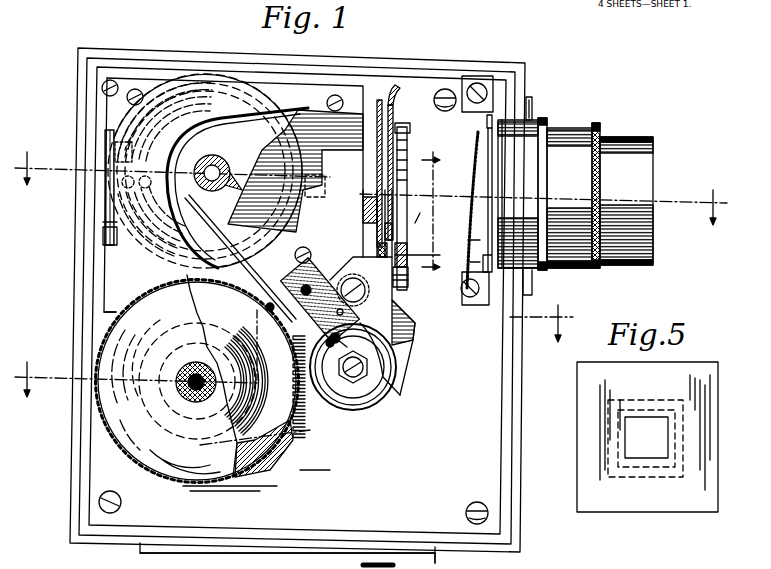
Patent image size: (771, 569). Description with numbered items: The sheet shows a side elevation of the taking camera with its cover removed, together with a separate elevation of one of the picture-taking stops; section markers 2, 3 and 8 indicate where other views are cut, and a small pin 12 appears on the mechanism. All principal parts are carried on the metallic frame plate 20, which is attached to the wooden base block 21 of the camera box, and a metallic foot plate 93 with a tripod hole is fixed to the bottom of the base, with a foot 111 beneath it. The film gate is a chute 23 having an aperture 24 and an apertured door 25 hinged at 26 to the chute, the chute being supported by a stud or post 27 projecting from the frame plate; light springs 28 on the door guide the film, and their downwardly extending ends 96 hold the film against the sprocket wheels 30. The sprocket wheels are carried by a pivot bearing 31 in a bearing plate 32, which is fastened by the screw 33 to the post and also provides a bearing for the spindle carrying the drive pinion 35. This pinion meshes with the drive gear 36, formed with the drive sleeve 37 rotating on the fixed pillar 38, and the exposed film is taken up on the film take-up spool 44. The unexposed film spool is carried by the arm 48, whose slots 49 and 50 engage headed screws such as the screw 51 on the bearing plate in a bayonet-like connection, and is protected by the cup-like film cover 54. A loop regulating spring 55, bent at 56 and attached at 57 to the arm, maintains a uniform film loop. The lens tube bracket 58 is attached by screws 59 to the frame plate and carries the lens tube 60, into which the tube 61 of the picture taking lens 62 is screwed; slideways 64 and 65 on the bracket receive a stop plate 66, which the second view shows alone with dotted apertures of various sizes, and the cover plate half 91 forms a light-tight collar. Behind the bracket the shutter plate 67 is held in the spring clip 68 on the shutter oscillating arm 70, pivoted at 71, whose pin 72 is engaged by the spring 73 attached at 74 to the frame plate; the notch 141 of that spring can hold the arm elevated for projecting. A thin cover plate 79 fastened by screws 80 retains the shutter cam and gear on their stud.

In FIG. 1, the section line 2- 2 is at (294, 375).
In FIG. 1, the section line 3- 3 is at (371, 196).
In FIG. 1, the section line 8- 8 is at (435, 216).
In FIG. 1, the pin 12 is at (358, 315).
In FIG. 1, the frame plate 20 is at (511, 420).
In FIG. 1, the base block 21 is at (511, 466).
In FIG. 1, the chute 23 is at (386, 130).
In FIG. 1, the aperture 24 is at (322, 186).
In FIG. 1, the apertured door 25 is at (396, 108).
In FIG. 1, the hinge 26 is at (410, 135).
In FIG. 1, the stud or post 27 is at (373, 249).
In FIG. 1, the light springs 28 is at (376, 160).
In FIG. 1, the film sprocket wheels 30 is at (392, 412).
In FIG. 1, the pivot bearing 31 is at (350, 380).
In FIG. 1, the bearing plate 32 is at (408, 360).
In FIG. 1, the screw 33 is at (350, 270).
In FIG. 1, the drive pinion 35 is at (286, 387).
In FIG. 1, the drive gear 36 is at (275, 459).
In FIG. 1, the drive sleeve 37 is at (180, 392).
In FIG. 1, the fixed pillar 38 is at (194, 402).
In FIG. 1, the film take-up spool 44 is at (265, 345).
In FIG. 1, the arm 48 is at (228, 165).
In FIG. 1, the slot 49 is at (319, 300).
In FIG. 1, the slot 50 is at (356, 338).
In FIG. 1, the shouldered and headed screw 51 is at (290, 300).
In FIG. 1, the unexposed film cover 54 is at (190, 100).
In FIG. 1, the loop regulating spring 55 is at (250, 100).
In FIG. 1, the bend 56 is at (305, 100).
In FIG. 1, the spring attachment point 57 is at (320, 336).
In FIG. 1, the lens tube bracket 58 is at (533, 101).
In FIG. 1, the screws 59 is at (480, 88).
In FIG. 1, the lens tube 60 is at (533, 275).
In FIG. 1, the tube of picture taking lens 61 is at (562, 140).
In FIG. 1, the picture taking lens 62 is at (648, 212).
In FIG. 1, the slideway 64 is at (487, 122).
In FIG. 1, the slideway 65 is at (478, 264).
In FIG. 1, the stop plate 66 is at (490, 176).
In FIG. 5, the stop plate 66 is at (678, 507).
In FIG. 1, the shutter plate 67 is at (476, 150).
In FIG. 1, the spring clip 68 is at (461, 238).
In FIG. 1, the shutter oscillating arm 70 is at (414, 230).
In FIG. 1, the pivot 71 is at (162, 120).
In FIG. 1, the stud or pin 72 is at (137, 196).
In FIG. 1, the spring 73 is at (108, 150).
In FIG. 1, the spring attachment point 74 is at (106, 235).
In FIG. 1, the cover plate 79 is at (113, 282).
In FIG. 1, the screws 80 is at (135, 89).
In FIG. 1, the cover plate half 91 is at (533, 107).
In FIG. 1, the foot plate 93 is at (232, 556).
In FIG. 1, the downwardly extending spring end 96 is at (415, 330).
In FIG. 1, the foot 111 is at (457, 558).
In FIG. 1, the notch 141 is at (108, 224).